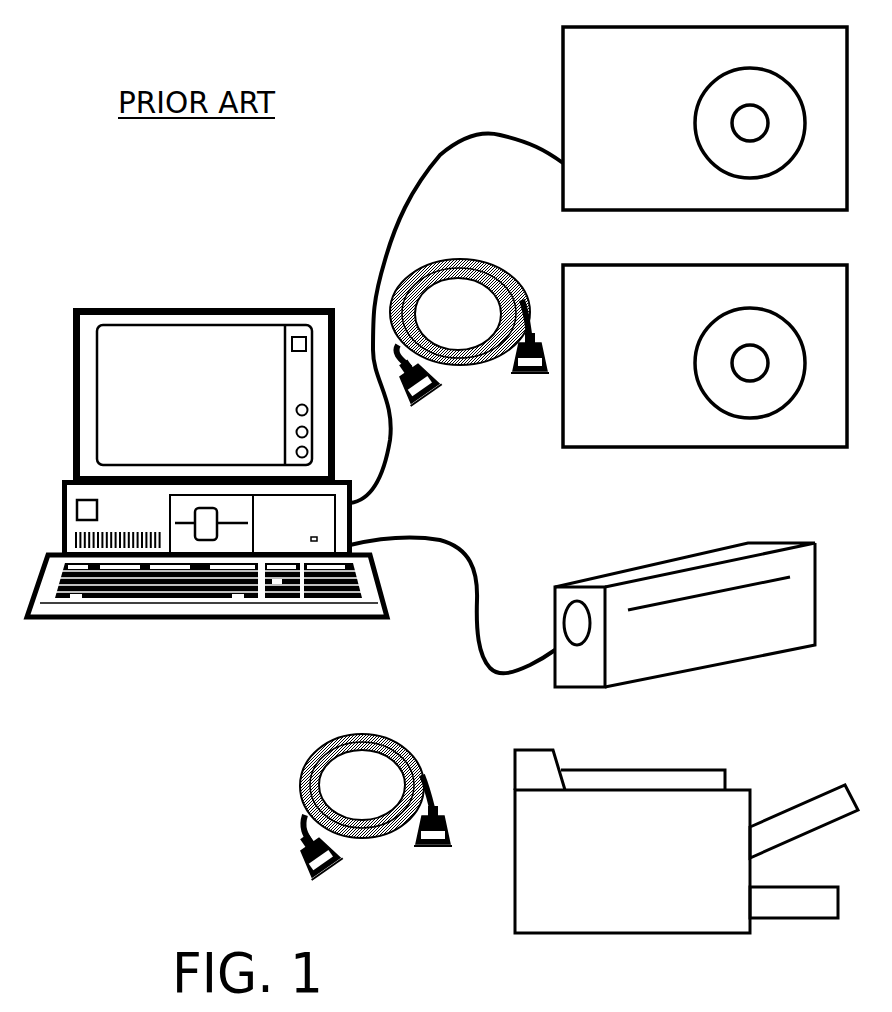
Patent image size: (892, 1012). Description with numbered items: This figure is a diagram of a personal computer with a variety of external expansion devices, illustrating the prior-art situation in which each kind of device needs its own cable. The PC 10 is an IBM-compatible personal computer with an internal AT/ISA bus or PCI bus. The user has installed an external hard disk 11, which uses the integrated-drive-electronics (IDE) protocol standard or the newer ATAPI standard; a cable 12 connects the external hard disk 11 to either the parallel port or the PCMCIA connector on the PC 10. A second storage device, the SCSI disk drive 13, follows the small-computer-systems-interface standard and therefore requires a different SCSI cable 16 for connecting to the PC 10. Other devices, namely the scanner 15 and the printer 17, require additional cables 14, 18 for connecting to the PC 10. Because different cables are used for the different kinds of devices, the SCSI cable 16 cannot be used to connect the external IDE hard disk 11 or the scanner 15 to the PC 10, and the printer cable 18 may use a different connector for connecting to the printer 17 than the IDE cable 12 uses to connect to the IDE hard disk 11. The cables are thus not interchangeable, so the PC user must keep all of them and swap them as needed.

The PC 10 is at (110, 615).
The external hard disk 11 is at (609, 66).
The cable 12 is at (396, 216).
The SCSI disk drive 13 is at (601, 306).
The cable 14 is at (480, 588).
The scanner 15 is at (767, 632).
The SCSI cable 16 is at (482, 357).
The printer 17 is at (735, 921).
The printer cable 18 is at (381, 837).